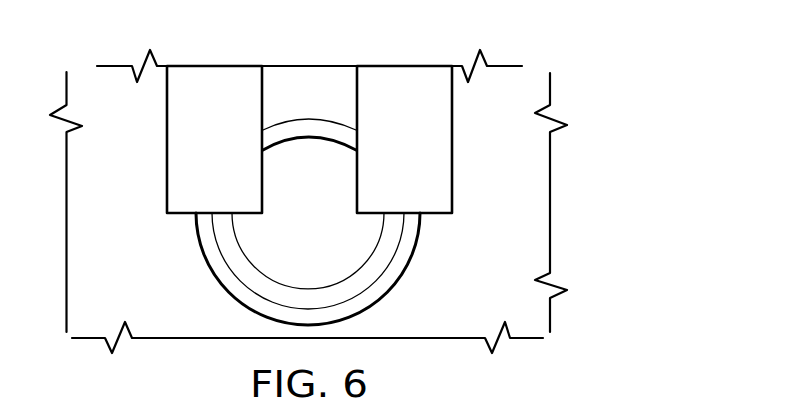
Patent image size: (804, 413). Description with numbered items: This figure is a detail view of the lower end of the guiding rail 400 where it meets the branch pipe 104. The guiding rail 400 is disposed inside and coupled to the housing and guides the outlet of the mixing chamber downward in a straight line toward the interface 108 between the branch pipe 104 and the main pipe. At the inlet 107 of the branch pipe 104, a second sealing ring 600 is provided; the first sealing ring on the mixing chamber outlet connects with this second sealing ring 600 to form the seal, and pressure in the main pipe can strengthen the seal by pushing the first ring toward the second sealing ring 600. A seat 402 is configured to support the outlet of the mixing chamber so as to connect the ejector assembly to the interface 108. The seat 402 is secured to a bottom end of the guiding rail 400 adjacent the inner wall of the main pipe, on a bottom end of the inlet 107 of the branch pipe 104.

The guiding rail 400 is at (167, 155).
The second sealing ring 600 is at (285, 130).
The branch pipe 104 is at (335, 122).
The inlet of the branch pipe 107 is at (384, 233).
The interface 108 is at (210, 223).
The seat 402 is at (383, 286).